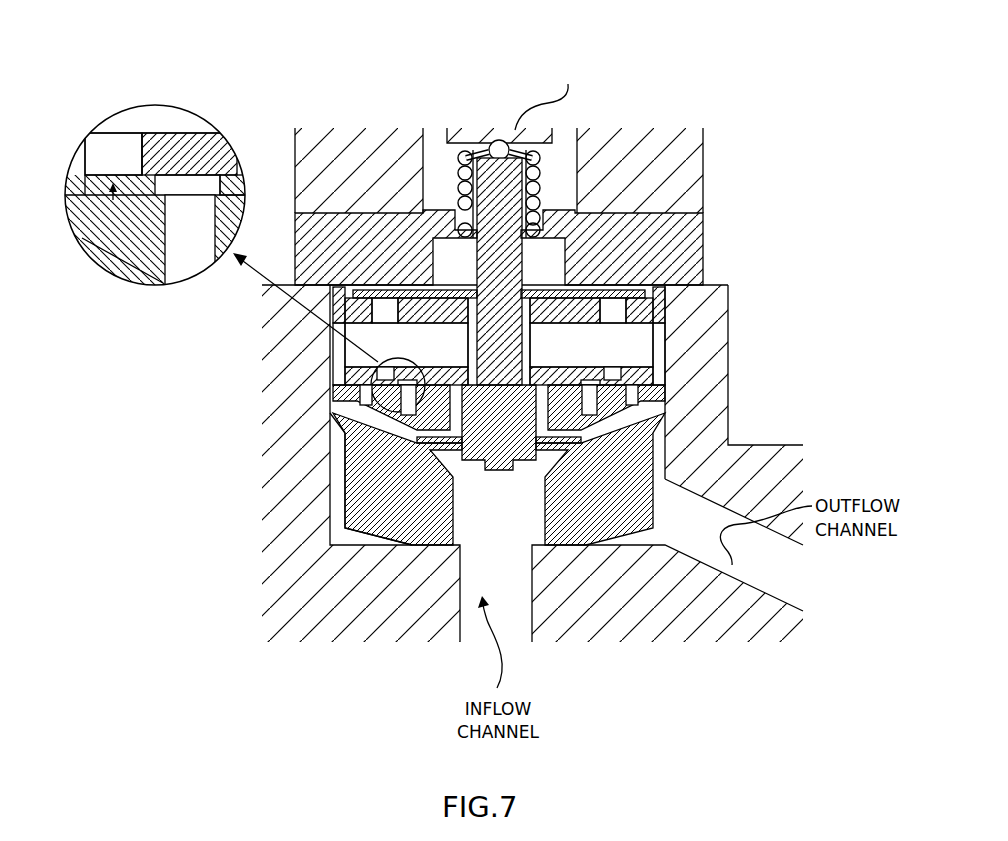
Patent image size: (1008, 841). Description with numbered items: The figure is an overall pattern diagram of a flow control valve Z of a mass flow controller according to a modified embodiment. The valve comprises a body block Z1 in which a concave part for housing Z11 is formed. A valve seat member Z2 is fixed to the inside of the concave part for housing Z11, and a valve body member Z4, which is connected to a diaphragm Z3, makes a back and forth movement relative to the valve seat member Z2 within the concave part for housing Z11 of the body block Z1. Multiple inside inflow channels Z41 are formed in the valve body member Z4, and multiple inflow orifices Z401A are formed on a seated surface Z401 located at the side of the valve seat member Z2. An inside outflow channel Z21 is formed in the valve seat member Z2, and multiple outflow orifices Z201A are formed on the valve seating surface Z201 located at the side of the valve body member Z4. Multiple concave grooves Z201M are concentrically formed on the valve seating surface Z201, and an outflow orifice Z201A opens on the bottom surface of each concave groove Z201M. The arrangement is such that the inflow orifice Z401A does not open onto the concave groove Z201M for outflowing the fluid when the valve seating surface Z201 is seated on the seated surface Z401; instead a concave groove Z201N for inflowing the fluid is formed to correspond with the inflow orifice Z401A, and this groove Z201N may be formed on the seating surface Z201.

The flow control valve Z is at (285, 43).
The body block Z1 is at (287, 486).
The concave part for housing Z11 is at (336, 540).
The valve seat member Z2 is at (657, 321).
The inside outflow channel Z21 is at (600, 356).
The valve seating surface Z201 is at (135, 247).
The outflow orifice Z201A is at (84, 242).
The concave groove for outflowing Z201M is at (116, 175).
The concave groove for inflowing Z201N is at (187, 166).
The diaphragm Z3 is at (703, 241).
The valve body member Z4 is at (620, 417).
The seated surface Z401 is at (420, 373).
The inflow orifice Z401A is at (199, 186).
The inside inflow channel Z41 is at (363, 410).